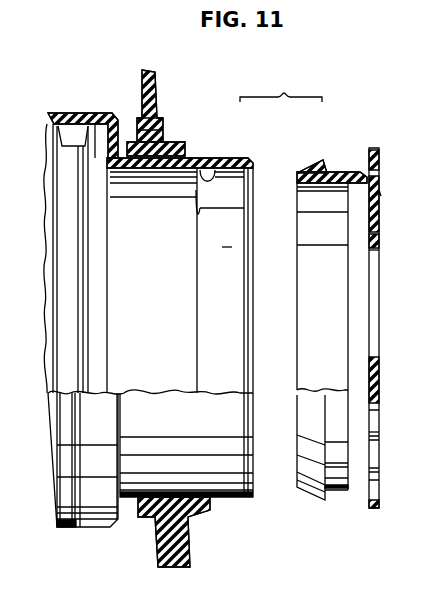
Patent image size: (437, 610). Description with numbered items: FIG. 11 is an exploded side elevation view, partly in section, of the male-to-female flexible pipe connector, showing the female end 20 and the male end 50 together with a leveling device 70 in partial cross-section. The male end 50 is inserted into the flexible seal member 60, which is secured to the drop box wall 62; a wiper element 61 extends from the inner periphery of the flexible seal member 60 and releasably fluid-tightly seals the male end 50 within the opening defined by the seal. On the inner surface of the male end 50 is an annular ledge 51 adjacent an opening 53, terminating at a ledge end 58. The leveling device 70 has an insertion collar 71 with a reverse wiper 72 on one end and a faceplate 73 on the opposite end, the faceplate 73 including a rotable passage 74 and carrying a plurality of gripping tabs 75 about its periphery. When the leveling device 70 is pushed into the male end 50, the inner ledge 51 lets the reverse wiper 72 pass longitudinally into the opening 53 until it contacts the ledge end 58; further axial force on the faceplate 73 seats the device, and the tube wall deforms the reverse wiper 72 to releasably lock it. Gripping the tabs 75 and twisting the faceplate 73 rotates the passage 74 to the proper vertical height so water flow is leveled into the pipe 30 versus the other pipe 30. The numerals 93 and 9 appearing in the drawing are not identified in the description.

The female end 20 is at (83, 95).
The pipe 30 is at (68, 189).
The male end 50 is at (226, 103).
The annular ledge 51 is at (238, 166).
The opening 53 is at (238, 237).
The ledge end 58 is at (228, 160).
The flexible seal member 60 is at (164, 133).
The wiper element 61 is at (178, 154).
The drop box wall 62 is at (141, 93).
The leveling device 70 is at (385, 152).
The insertion collar 71 is at (352, 500).
The reverse wiper 72 is at (306, 164).
The faceplate 73 is at (378, 437).
The rotable passage 74 is at (378, 250).
The gripping tabs 75 is at (375, 412).
The seal 93 is at (408, 193).
The cable 9 is at (432, 98).